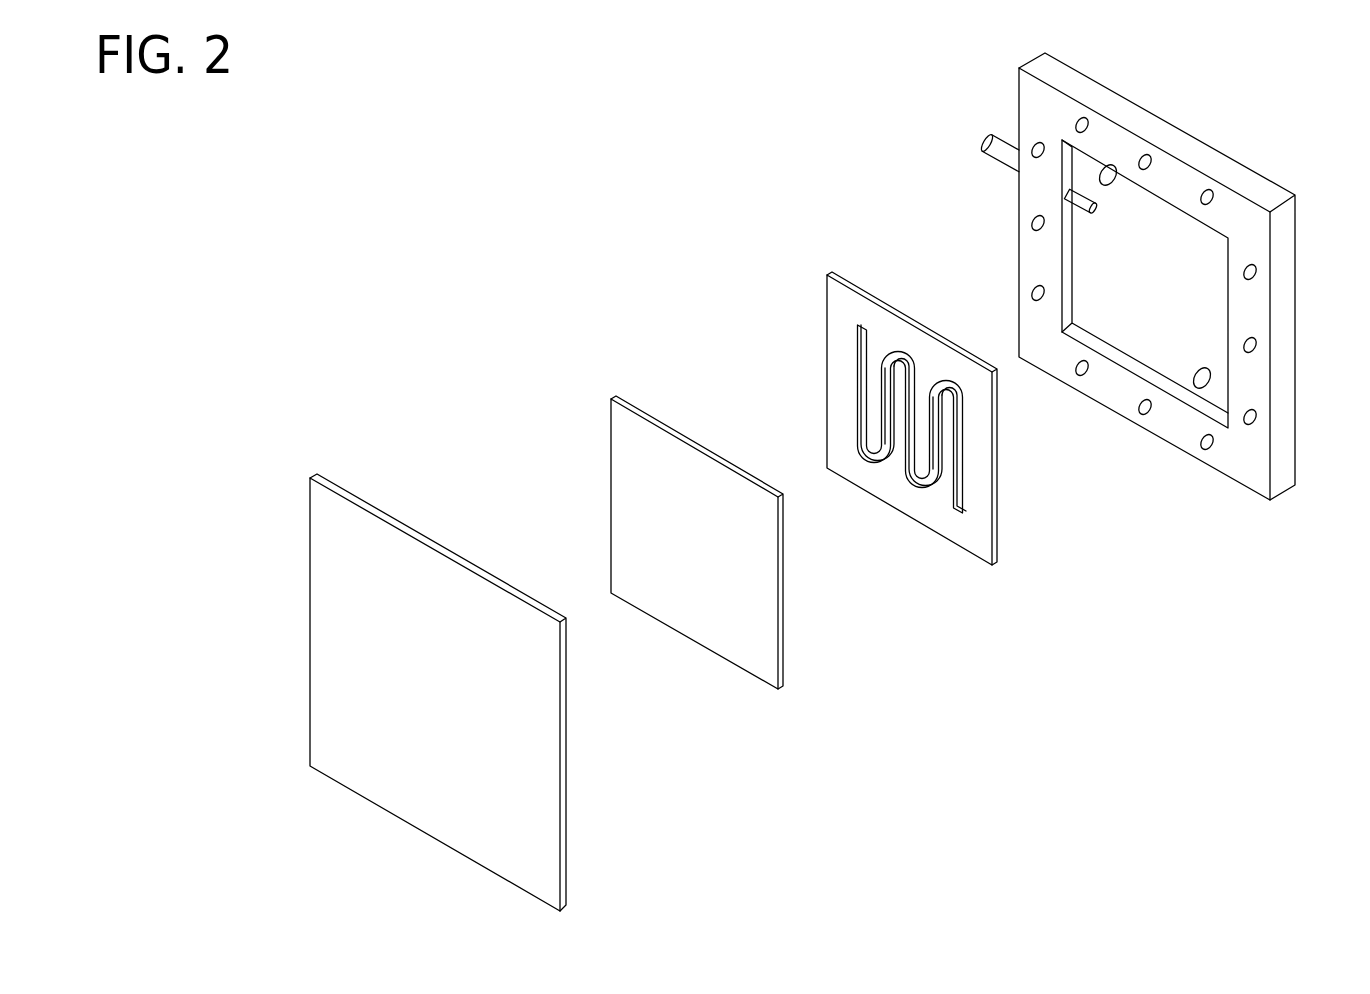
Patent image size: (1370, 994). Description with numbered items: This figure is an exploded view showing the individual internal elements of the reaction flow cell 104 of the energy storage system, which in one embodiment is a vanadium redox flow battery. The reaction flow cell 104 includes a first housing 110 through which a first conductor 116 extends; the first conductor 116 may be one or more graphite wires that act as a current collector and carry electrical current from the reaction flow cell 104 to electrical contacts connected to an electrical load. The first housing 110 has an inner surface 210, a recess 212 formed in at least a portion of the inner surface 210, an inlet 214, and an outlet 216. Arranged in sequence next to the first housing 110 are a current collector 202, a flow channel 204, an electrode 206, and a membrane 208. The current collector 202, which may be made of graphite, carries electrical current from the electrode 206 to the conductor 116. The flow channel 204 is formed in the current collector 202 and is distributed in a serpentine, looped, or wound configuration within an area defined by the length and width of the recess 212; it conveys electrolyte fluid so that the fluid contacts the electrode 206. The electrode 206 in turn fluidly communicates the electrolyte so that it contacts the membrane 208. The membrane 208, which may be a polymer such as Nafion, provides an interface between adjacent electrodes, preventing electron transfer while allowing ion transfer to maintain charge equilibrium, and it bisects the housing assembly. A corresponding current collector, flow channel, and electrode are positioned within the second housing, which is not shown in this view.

The reaction flow cell 104 is at (266, 206).
The first housing 110 is at (1243, 178).
The first conductor 116 is at (984, 148).
The current collector 202 is at (838, 312).
The flow channel 204 is at (915, 486).
The electrode 206 is at (622, 451).
The membrane 208 is at (323, 528).
The inner surface 210 is at (1036, 328).
The recess 212 is at (1133, 338).
The inlet 214 is at (1193, 393).
The outlet 216 is at (1118, 200).